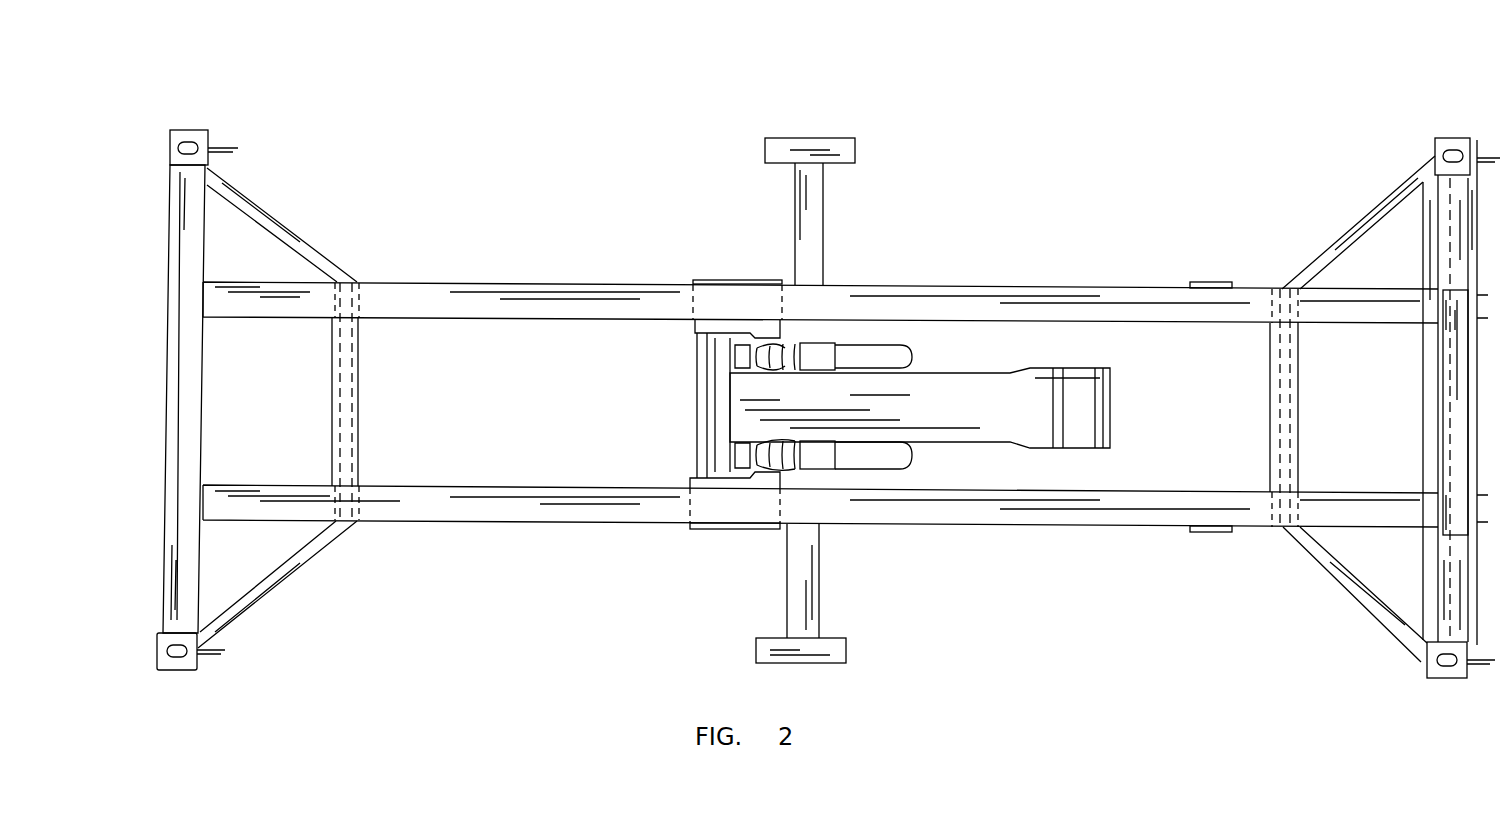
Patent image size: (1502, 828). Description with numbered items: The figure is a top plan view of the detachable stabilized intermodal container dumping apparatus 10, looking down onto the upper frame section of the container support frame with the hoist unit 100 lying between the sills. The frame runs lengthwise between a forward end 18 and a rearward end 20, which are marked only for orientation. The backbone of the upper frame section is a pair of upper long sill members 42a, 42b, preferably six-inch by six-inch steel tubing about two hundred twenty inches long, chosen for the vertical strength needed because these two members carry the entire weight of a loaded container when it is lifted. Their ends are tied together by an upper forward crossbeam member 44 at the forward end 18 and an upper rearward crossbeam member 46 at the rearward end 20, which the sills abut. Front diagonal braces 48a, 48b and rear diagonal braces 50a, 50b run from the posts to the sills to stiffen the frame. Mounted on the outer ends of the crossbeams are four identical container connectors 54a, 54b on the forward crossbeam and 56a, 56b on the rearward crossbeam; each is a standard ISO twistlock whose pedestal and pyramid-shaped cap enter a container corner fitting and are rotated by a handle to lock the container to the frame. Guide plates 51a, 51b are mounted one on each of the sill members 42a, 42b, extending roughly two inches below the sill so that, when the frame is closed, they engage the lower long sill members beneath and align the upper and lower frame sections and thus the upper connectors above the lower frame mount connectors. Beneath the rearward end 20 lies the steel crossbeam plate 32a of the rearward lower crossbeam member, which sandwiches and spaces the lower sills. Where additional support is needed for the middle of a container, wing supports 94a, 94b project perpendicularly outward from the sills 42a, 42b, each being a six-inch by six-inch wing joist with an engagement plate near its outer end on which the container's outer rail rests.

The detachable stabilized intermodal container dumping apparatus 10 is at (489, 268).
The forward end 18 is at (160, 254).
The rearward end 20 is at (1480, 580).
The steel crossbeam plate 32a is at (1423, 408).
The upper long sill member 42a is at (596, 508).
The upper long sill member 42b is at (562, 292).
The upper forward crossbeam member 44 is at (192, 406).
The upper rearward crossbeam member 46 is at (1453, 595).
The front diagonal brace 48a is at (273, 590).
The front diagonal brace 48b is at (278, 213).
The rear diagonal brace 50a is at (1343, 592).
The rear diagonal brace 50b is at (1337, 235).
The guide plate 51a is at (1220, 538).
The guide plate 51b is at (1214, 280).
The container connector 54a is at (178, 652).
The container connector 54b is at (197, 148).
The container connector 56a is at (1447, 662).
The container connector 56b is at (1442, 148).
The wing support 94a is at (810, 578).
The wing support 94b is at (815, 238).
The hoist unit 100 is at (975, 420).